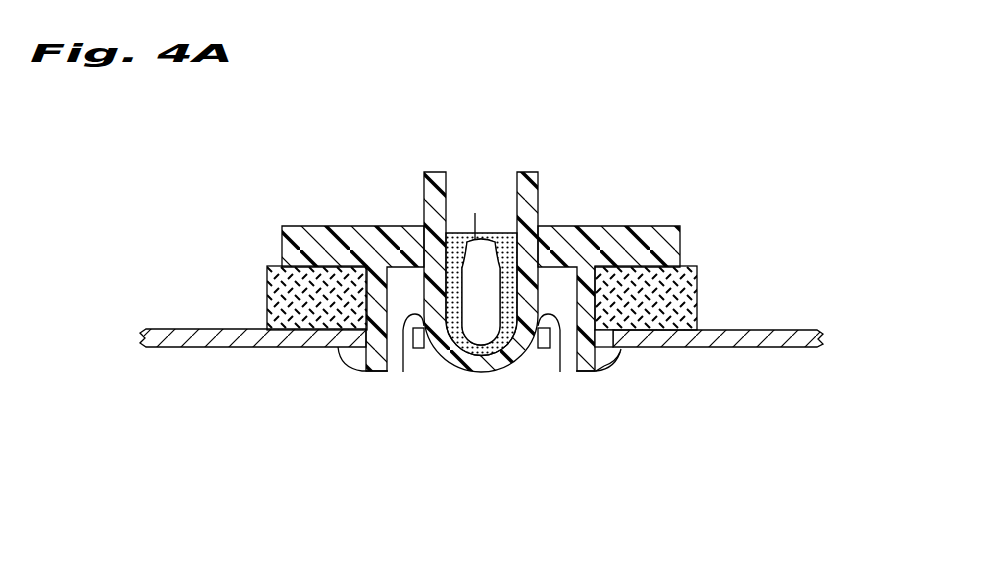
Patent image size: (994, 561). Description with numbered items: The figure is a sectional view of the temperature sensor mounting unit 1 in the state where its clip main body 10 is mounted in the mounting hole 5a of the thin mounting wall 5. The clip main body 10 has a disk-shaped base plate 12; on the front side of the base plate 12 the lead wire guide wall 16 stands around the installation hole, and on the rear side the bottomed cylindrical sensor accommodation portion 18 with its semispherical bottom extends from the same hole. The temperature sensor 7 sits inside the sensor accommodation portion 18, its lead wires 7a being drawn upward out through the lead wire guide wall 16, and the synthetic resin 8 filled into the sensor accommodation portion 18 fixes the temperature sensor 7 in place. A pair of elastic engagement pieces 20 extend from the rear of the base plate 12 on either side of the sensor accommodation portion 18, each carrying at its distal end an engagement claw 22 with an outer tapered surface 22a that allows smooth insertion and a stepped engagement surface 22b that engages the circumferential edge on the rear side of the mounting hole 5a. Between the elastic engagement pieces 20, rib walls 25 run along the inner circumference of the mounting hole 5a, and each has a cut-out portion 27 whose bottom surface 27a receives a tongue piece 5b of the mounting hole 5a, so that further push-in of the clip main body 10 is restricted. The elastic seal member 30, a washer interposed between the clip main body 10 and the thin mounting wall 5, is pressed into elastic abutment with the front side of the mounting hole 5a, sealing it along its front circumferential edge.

The temperature sensor mounting unit 1 is at (614, 198).
The thin mounting wall 5 is at (806, 347).
The mounting hole 5a is at (613, 338).
The tongue piece 5b is at (412, 358).
The temperature sensor 7 is at (479, 332).
The lead wire 7a is at (488, 240).
The synthetic resin 8 is at (506, 357).
The clip main body 10 is at (312, 221).
The base plate 12 is at (578, 232).
The lead wire guide wall 16 is at (425, 182).
The sensor accommodation portion 18 is at (478, 365).
The elastic engagement piece 20 is at (363, 303).
The engagement claw 22 is at (358, 362).
The tapered surface 22a is at (608, 367).
The stepped engagement surface 22b is at (608, 362).
The rib wall 25 is at (562, 340).
The cut-out portion 27 is at (417, 360).
The bottom surface 27a is at (397, 360).
The elastic seal member 30 is at (693, 278).